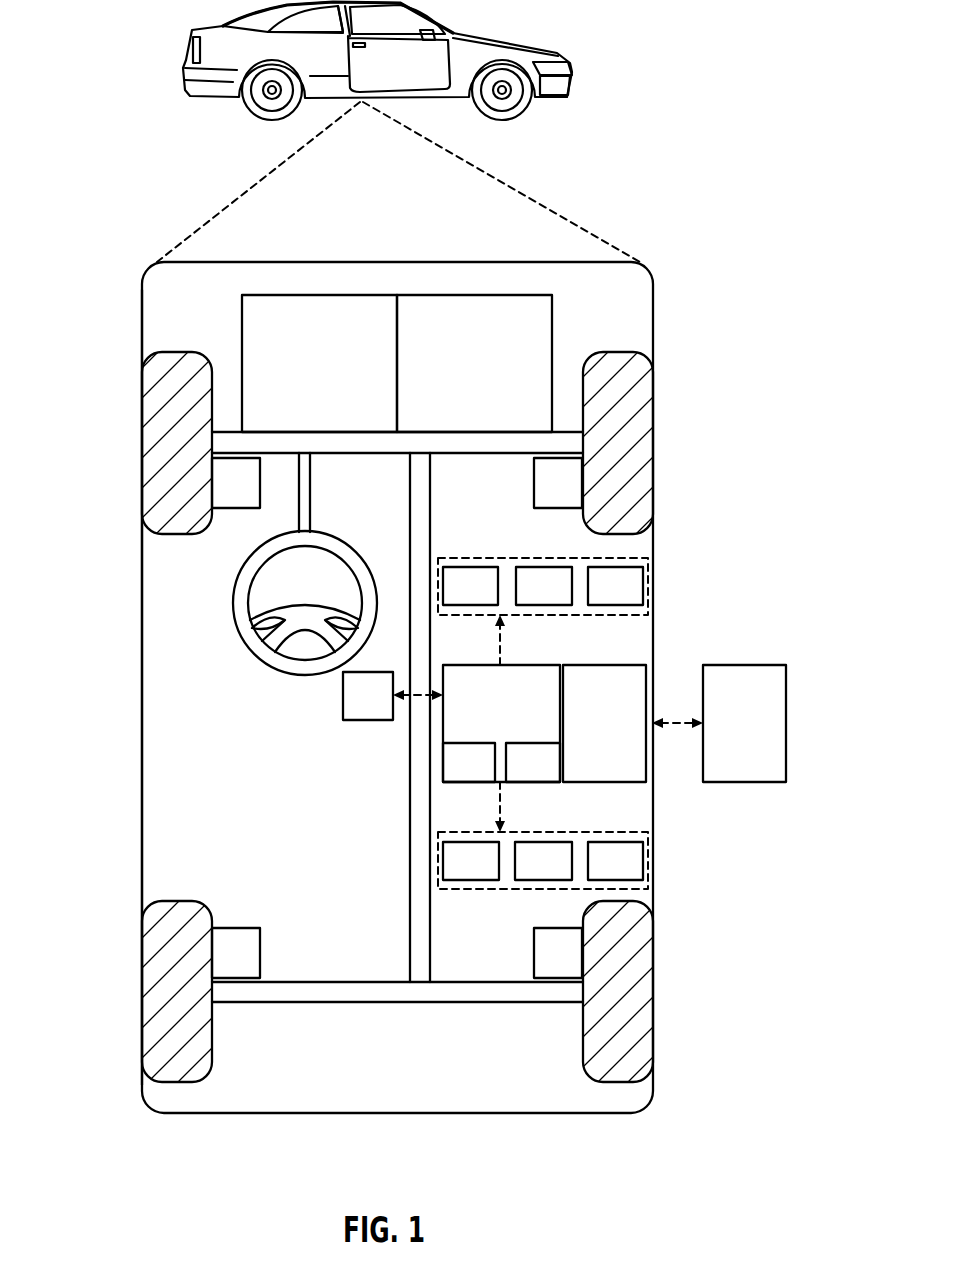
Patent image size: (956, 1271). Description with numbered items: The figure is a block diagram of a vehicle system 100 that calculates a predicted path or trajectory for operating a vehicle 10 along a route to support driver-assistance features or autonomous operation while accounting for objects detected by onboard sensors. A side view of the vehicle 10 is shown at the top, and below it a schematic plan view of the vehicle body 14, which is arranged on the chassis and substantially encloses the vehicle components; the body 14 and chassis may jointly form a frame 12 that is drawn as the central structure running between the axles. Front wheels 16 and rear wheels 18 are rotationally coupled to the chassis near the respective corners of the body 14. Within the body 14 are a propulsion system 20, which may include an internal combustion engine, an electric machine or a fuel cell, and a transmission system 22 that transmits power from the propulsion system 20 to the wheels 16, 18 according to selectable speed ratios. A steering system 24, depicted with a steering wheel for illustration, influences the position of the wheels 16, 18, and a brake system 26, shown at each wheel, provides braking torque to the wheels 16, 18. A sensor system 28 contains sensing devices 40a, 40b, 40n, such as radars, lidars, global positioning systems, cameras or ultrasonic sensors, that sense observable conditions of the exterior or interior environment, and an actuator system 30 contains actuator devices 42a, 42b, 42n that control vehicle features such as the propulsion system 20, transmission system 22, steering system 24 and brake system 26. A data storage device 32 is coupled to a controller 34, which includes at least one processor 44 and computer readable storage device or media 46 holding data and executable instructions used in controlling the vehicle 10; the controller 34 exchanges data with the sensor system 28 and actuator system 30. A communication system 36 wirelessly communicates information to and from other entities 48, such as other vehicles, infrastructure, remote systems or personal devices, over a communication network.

The vehicle 10 is at (190, 50).
The vehicle system 100 is at (710, 246).
The frame 12 is at (410, 955).
The body 14 is at (141, 873).
The front wheels 16 is at (141, 442).
The rear wheels 18 is at (141, 993).
The propulsion system 20 is at (305, 384).
The transmission system 22 is at (460, 384).
The steering system 24 is at (328, 506).
The brake system 26 is at (221, 503).
The sensor system 28 is at (580, 582).
The actuator system 30 is at (543, 880).
The data storage device 32 is at (353, 714).
The controller 34 is at (486, 721).
The communication system 36 is at (589, 739).
The sensing device 40a is at (449, 602).
The sensing device 40b is at (523, 602).
The sensing device 40n is at (594, 602).
The actuator device 42a is at (450, 877).
The actuator device 42b is at (522, 877).
The actuator device 42n is at (594, 877).
The processor 44 is at (454, 778).
The computer readable storage device or media 46 is at (518, 778).
The other entities 48 is at (730, 739).